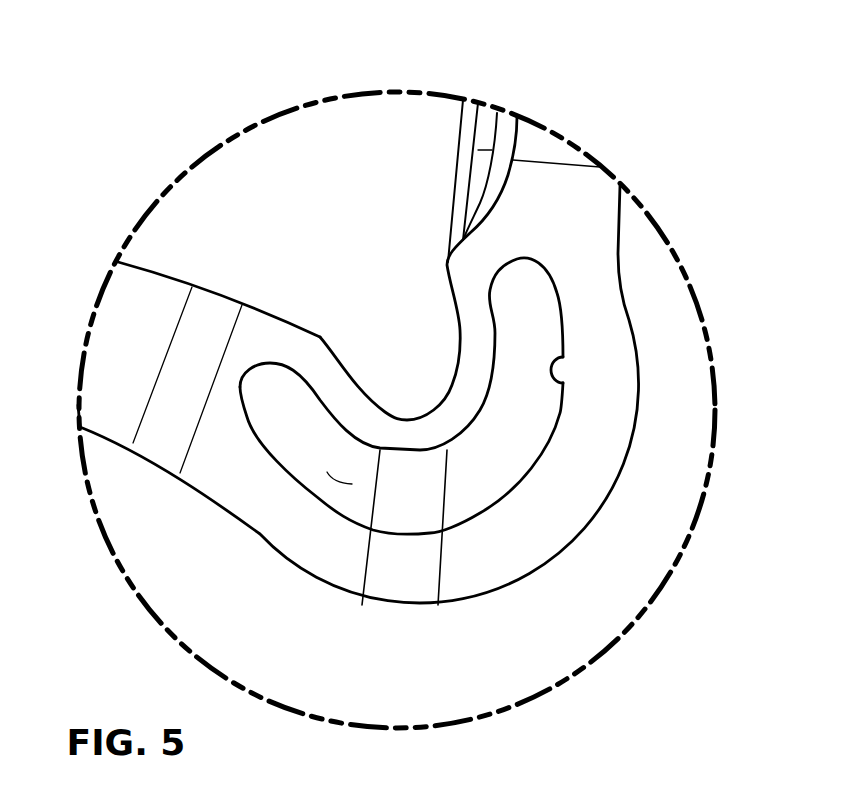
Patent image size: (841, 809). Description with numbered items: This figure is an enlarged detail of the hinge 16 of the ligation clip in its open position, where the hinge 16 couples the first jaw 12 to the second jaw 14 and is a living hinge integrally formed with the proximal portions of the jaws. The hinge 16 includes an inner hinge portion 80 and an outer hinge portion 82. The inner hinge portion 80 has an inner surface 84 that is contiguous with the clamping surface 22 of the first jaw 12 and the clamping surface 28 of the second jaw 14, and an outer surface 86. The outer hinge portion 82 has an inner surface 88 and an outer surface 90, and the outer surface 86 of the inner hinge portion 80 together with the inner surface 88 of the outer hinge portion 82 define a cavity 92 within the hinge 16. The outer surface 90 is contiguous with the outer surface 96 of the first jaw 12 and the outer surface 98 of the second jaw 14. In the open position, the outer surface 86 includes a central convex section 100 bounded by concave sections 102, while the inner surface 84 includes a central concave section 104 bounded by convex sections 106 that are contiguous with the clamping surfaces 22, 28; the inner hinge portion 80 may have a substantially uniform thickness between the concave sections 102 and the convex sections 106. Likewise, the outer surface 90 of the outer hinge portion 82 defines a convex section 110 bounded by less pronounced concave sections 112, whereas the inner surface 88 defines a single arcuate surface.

The first jaw 12 is at (548, 139).
The second jaw 14 is at (95, 419).
The hinge 16 is at (645, 473).
The clamping surface 22 is at (460, 124).
The clamping surface 28 is at (149, 270).
The inner hinge portion 80 is at (411, 399).
The outer hinge portion 82 is at (546, 585).
The inner surface 84 is at (365, 395).
The outer surface 86 is at (363, 544).
The inner surface 88 is at (565, 382).
The outer surface 90 is at (590, 520).
The cavity 92 is at (341, 483).
The outer surface 96 is at (622, 200).
The outer surface 98 is at (113, 442).
The central convex section 100 is at (440, 546).
The concave sections 102 is at (500, 345).
The central concave section 104 is at (451, 388).
The convex sections 106 is at (318, 337).
The convex section 110 is at (482, 600).
The concave sections 112 is at (627, 297).